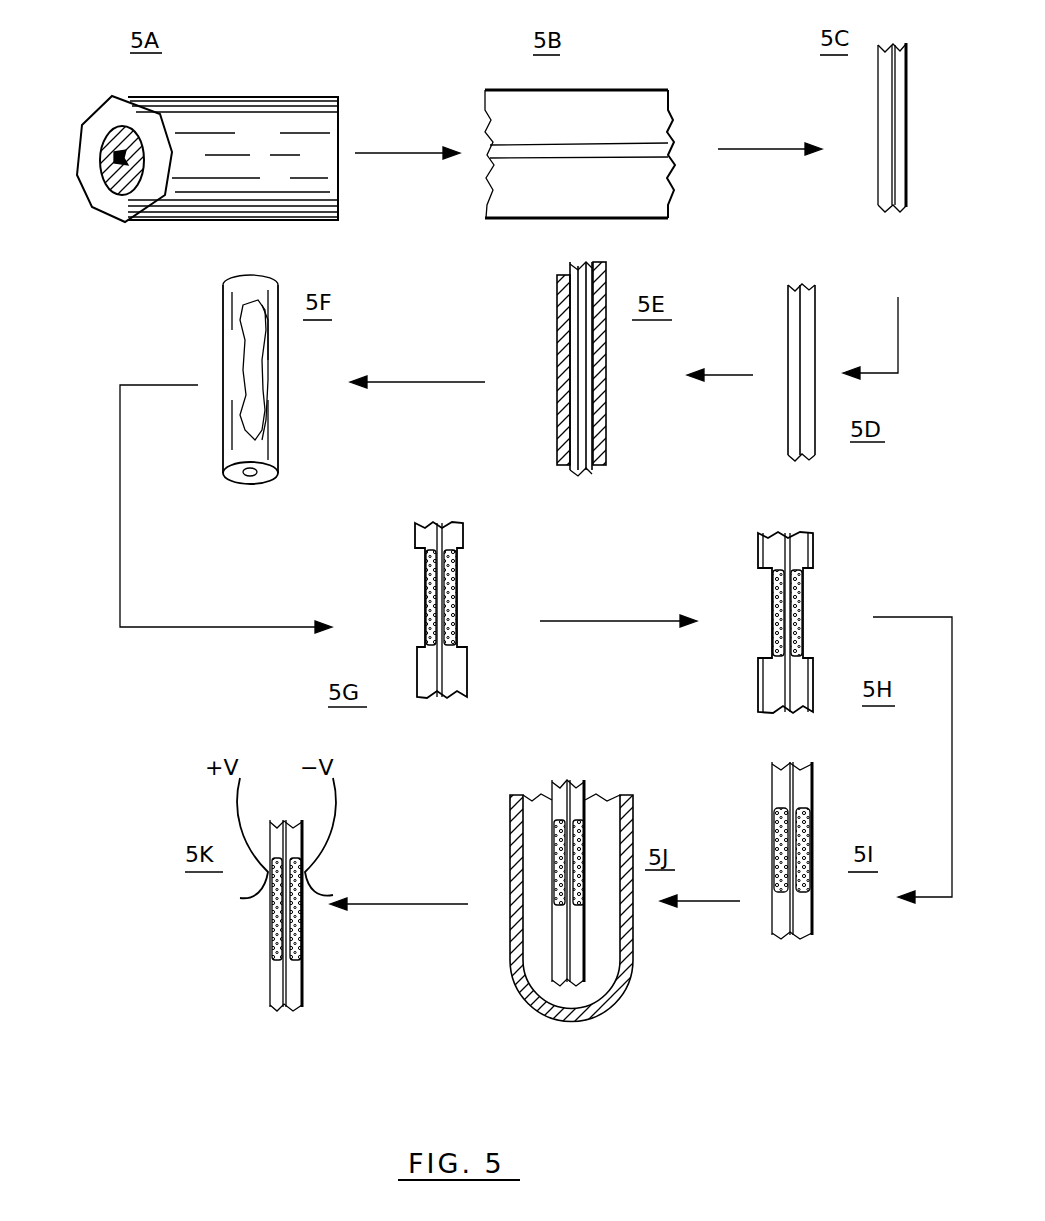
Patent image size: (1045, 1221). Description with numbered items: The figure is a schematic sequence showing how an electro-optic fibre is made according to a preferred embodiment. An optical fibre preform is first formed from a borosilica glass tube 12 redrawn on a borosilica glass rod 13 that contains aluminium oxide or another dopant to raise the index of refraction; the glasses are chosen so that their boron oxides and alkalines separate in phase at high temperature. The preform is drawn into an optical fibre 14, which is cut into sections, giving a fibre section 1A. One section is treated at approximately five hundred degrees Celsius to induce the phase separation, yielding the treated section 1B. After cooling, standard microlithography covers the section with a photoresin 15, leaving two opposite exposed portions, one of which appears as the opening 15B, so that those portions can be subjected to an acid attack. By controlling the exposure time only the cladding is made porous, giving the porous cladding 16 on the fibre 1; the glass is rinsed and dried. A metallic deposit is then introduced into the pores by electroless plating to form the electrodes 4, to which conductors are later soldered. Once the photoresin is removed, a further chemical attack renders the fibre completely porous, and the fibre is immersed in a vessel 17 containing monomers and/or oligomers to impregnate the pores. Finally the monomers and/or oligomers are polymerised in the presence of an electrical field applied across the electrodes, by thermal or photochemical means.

The substrate plate 1 is at (420, 522).
The sliced plate 1A is at (875, 105).
The plate segment 1B is at (818, 335).
The porous electrode layer 4 is at (775, 580).
The bore of rod 12 is at (118, 155).
The rod 13 is at (257, 122).
The block 14 is at (630, 108).
The tube 15 is at (597, 295).
The tube window 15B is at (270, 420).
The dopant layer 16 is at (455, 582).
The vessel 17 is at (545, 995).